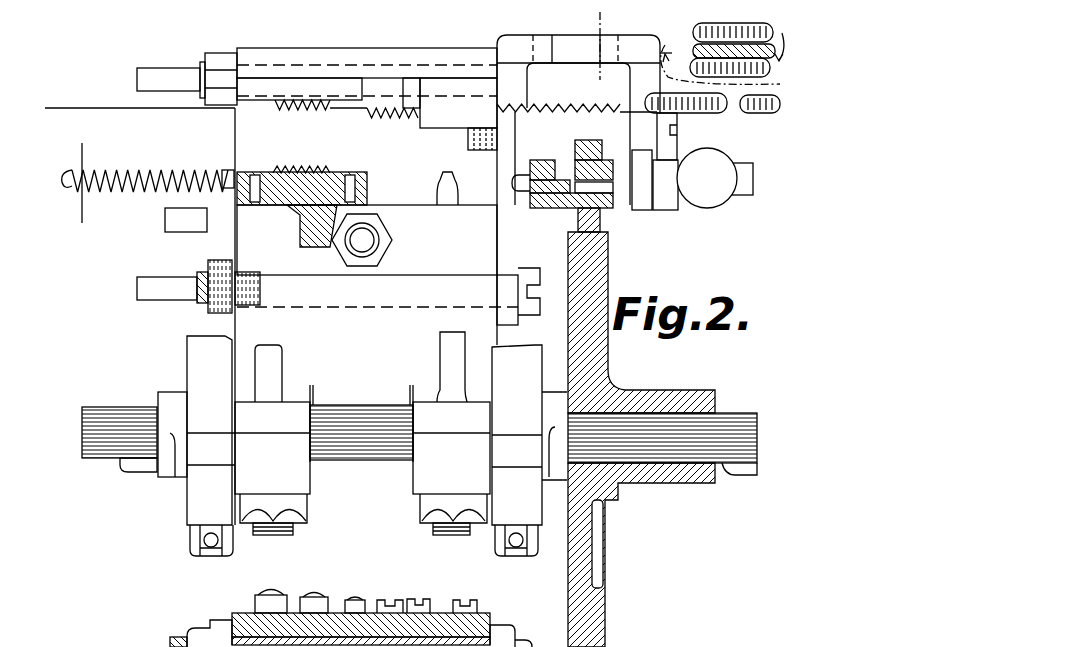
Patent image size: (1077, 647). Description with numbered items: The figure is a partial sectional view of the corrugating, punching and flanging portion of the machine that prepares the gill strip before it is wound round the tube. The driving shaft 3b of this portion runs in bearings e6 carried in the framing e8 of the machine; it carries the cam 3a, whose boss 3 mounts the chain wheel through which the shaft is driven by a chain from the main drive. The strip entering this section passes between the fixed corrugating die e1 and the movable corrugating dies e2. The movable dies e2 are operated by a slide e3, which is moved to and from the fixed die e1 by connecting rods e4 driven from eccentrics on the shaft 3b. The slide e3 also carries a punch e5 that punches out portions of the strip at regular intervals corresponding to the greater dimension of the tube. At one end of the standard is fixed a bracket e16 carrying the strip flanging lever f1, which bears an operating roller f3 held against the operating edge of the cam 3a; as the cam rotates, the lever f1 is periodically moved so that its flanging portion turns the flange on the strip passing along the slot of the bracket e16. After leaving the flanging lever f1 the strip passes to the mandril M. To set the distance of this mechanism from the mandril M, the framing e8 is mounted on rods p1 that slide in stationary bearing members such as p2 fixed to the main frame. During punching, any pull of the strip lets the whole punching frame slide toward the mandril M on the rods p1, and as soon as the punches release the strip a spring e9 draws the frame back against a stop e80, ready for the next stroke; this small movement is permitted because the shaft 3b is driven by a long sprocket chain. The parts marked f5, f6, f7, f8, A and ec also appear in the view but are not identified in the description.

The rods p1 is at (152, 78).
The lever f5 is at (72, 108).
The fixed corrugating die e1 is at (335, 90).
The toothed segment f6 is at (392, 132).
The spring e9 is at (138, 165).
The movable corrugating dies e2 is at (300, 172).
The slide e3 is at (390, 210).
The strip flanging lever f1 is at (548, 206).
The punch e5 is at (445, 185).
The stop e80 is at (175, 222).
The housing A is at (578, 178).
The toothed member f7 is at (566, 72).
The bracket e16 is at (640, 80).
The operating roller f3 is at (600, 218).
The mandril M is at (702, 62).
The rollers f8 is at (693, 32).
The stationary bearing member p2 is at (703, 205).
The boss 3 is at (657, 403).
The cam 3a is at (596, 610).
The driving shaft 3b is at (87, 443).
The framing e8 is at (185, 333).
The bearings e6 is at (425, 480).
The bracket ec is at (175, 507).
The connecting rods e4 is at (207, 548).